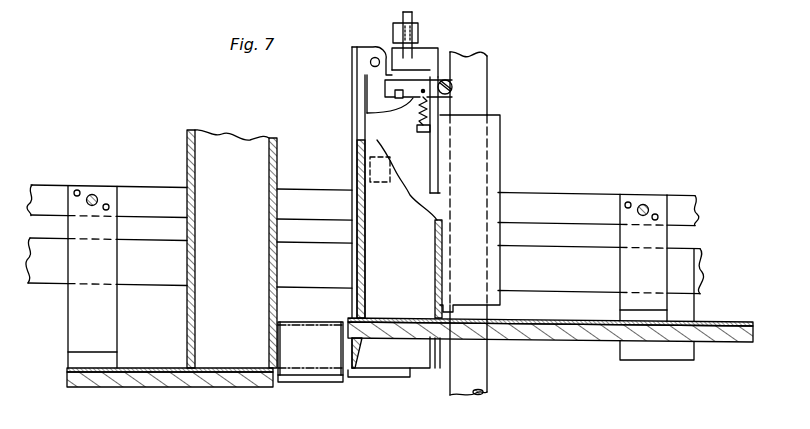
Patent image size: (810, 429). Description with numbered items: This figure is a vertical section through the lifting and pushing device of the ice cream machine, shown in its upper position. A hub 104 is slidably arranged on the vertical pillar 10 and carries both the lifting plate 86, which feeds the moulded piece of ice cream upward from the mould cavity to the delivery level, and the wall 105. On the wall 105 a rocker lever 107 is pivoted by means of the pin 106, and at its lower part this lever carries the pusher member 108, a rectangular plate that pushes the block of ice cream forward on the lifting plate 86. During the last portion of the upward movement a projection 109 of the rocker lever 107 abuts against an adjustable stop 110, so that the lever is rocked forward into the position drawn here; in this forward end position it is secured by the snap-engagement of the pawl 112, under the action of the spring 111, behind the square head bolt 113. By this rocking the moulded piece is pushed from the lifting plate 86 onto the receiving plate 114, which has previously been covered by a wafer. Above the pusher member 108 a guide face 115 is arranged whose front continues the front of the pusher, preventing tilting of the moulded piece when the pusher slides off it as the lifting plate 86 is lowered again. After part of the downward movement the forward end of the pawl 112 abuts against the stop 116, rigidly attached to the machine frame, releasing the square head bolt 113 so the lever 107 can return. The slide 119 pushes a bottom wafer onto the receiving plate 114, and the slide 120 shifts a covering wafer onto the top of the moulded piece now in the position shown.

The pillar 10 is at (484, 107).
The lifting plate 86 is at (393, 377).
The hub 104 is at (500, 140).
The wall 105 is at (418, 68).
The pin 106 is at (373, 57).
The rocker lever 107 is at (367, 117).
The pusher member 108 is at (356, 345).
The projection 109 is at (389, 86).
The adjustable stop 110 is at (418, 38).
The spring 111 is at (427, 113).
The pawl 112 is at (451, 83).
The square head bolt 113 is at (387, 92).
The receiving plate 114 is at (303, 382).
The guide face 115 is at (352, 229).
The stop 116 is at (378, 171).
The slide 119 is at (150, 387).
The slide 120 is at (562, 324).